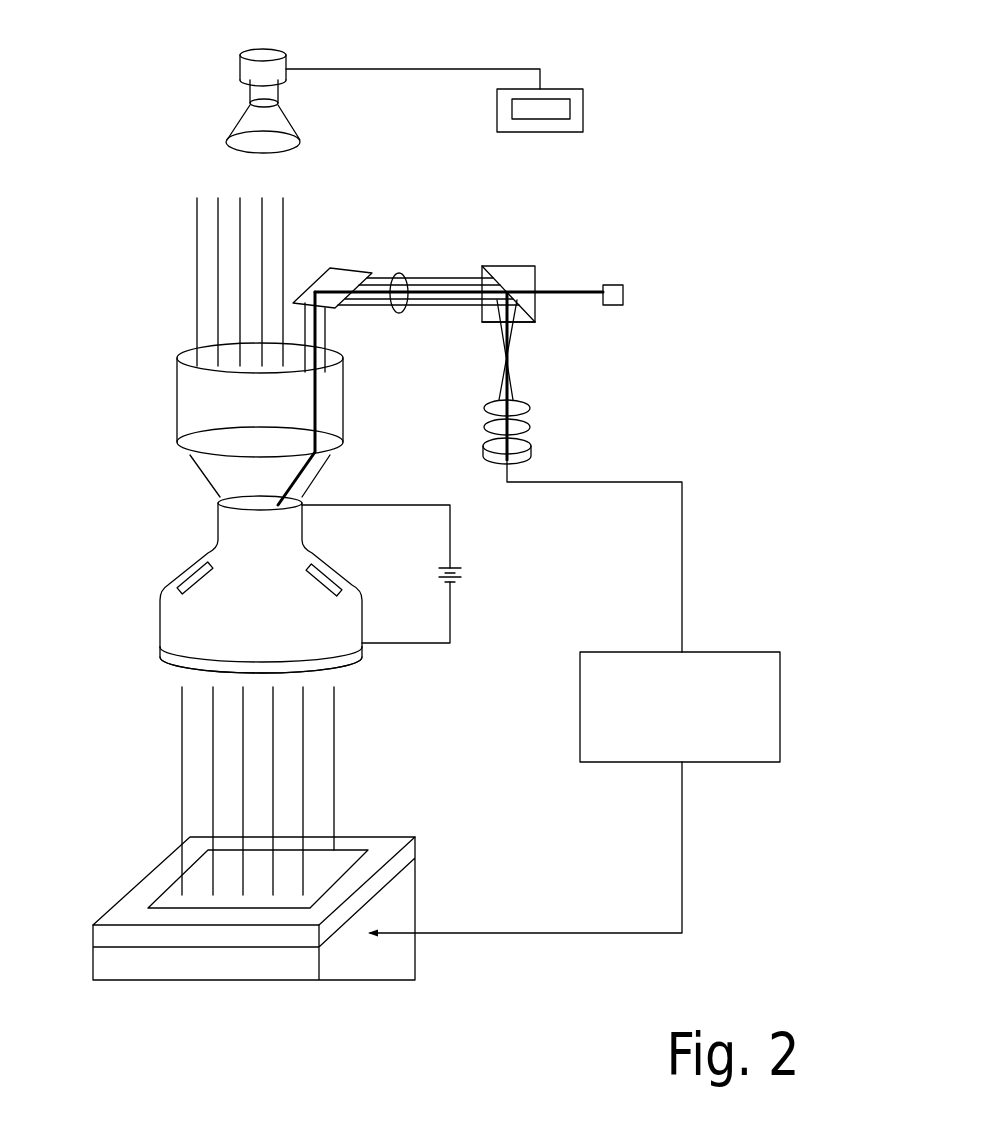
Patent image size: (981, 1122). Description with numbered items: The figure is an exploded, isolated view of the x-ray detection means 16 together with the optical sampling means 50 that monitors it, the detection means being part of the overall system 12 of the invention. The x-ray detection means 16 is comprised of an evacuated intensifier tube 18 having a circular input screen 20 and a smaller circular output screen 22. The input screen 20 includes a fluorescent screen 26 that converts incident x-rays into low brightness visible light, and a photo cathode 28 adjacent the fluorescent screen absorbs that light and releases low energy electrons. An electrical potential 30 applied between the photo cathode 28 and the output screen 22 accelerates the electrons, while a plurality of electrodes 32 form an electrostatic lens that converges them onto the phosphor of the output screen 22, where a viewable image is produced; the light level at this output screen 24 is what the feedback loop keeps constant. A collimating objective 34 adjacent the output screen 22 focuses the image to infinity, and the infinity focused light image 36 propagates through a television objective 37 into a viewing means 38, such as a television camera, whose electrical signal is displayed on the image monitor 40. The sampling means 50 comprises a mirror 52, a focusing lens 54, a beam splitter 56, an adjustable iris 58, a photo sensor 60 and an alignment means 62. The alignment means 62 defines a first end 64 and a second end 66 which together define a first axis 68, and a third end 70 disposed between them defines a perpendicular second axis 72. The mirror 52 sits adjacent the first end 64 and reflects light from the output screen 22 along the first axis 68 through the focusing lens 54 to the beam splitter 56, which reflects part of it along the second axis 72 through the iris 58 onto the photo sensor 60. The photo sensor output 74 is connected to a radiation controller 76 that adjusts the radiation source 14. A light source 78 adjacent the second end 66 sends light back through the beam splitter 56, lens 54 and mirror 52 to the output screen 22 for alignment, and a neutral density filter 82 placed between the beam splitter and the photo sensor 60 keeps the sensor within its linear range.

The display 12 is at (553, 99).
The radiation source 14 is at (128, 880).
The x-ray detection means 16 is at (230, 588).
The intensifier tube 18 is at (238, 548).
The input screen 20 is at (157, 662).
The output screen 22 is at (238, 500).
The output screen 24 is at (285, 765).
The fluorescent screen 26 is at (355, 665).
The photo cathode 28 is at (318, 652).
The electrical potential 30 is at (458, 565).
The electrodes 32 is at (190, 568).
The collimating objective 34 is at (202, 403).
The light image 36 is at (240, 268).
The television objective 37 is at (265, 118).
The viewing means 38 is at (276, 73).
The image monitor 40 is at (583, 108).
The optical sampling means 50 is at (474, 333).
The mirror 52 is at (313, 285).
The focusing lens 54 is at (399, 273).
The beam splitter 56 is at (492, 273).
The adjustable iris 58 is at (487, 404).
The photo sensor 60 is at (485, 452).
The alignment means 62 is at (537, 266).
The first end 64 is at (476, 322).
The second end 66 is at (540, 286).
The first axis 68 is at (477, 278).
The third end 70 is at (524, 325).
The second axis 72 is at (502, 352).
The photo sensor output 74 is at (610, 482).
The radiation controller 76 is at (715, 652).
The light source 78 is at (613, 305).
The neutral density filter 82 is at (483, 427).